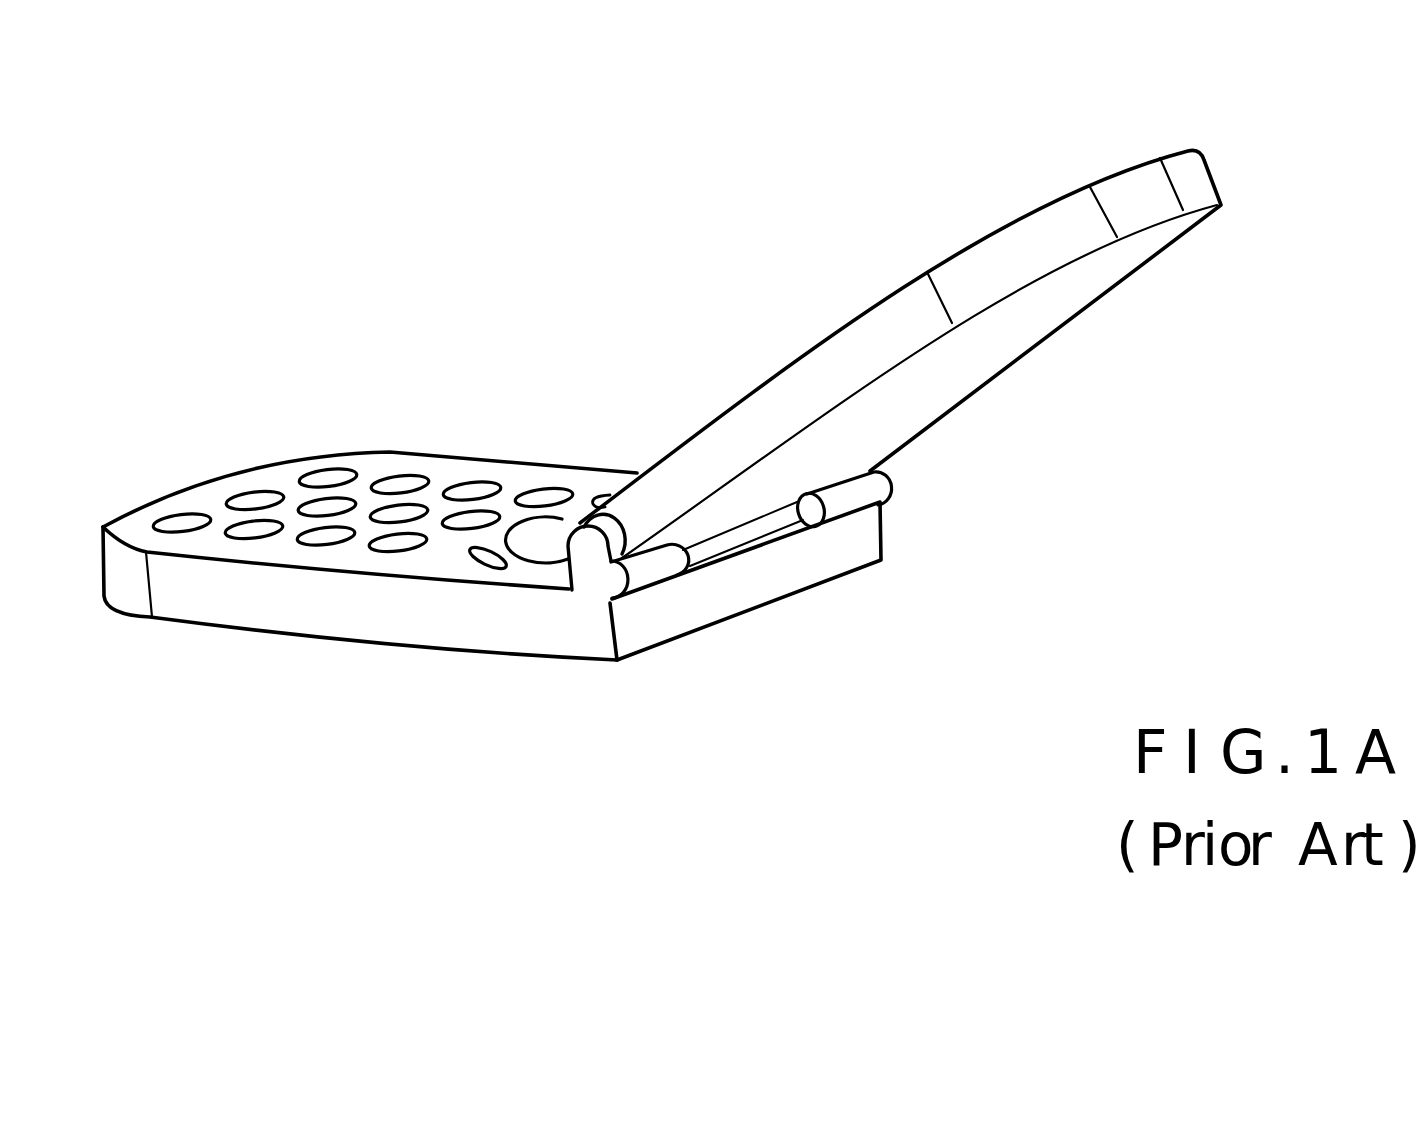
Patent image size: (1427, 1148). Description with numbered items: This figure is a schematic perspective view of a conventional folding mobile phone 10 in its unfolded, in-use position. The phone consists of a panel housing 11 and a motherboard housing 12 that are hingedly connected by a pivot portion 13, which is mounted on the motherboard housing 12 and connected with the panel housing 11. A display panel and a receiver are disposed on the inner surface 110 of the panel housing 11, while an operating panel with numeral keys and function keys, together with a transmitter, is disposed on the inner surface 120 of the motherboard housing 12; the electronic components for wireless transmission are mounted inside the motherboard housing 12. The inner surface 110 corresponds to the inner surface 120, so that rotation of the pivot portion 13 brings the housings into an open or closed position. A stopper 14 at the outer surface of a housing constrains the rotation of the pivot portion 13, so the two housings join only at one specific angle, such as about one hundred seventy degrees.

The folding mobile phone 10 is at (670, 432).
The panel housing 11 is at (908, 354).
The inner surface 110 is at (973, 238).
The motherboard housing 12 is at (492, 553).
The inner surface 120 is at (212, 490).
The pivot portion 13 is at (585, 556).
The stopper 14 is at (640, 577).